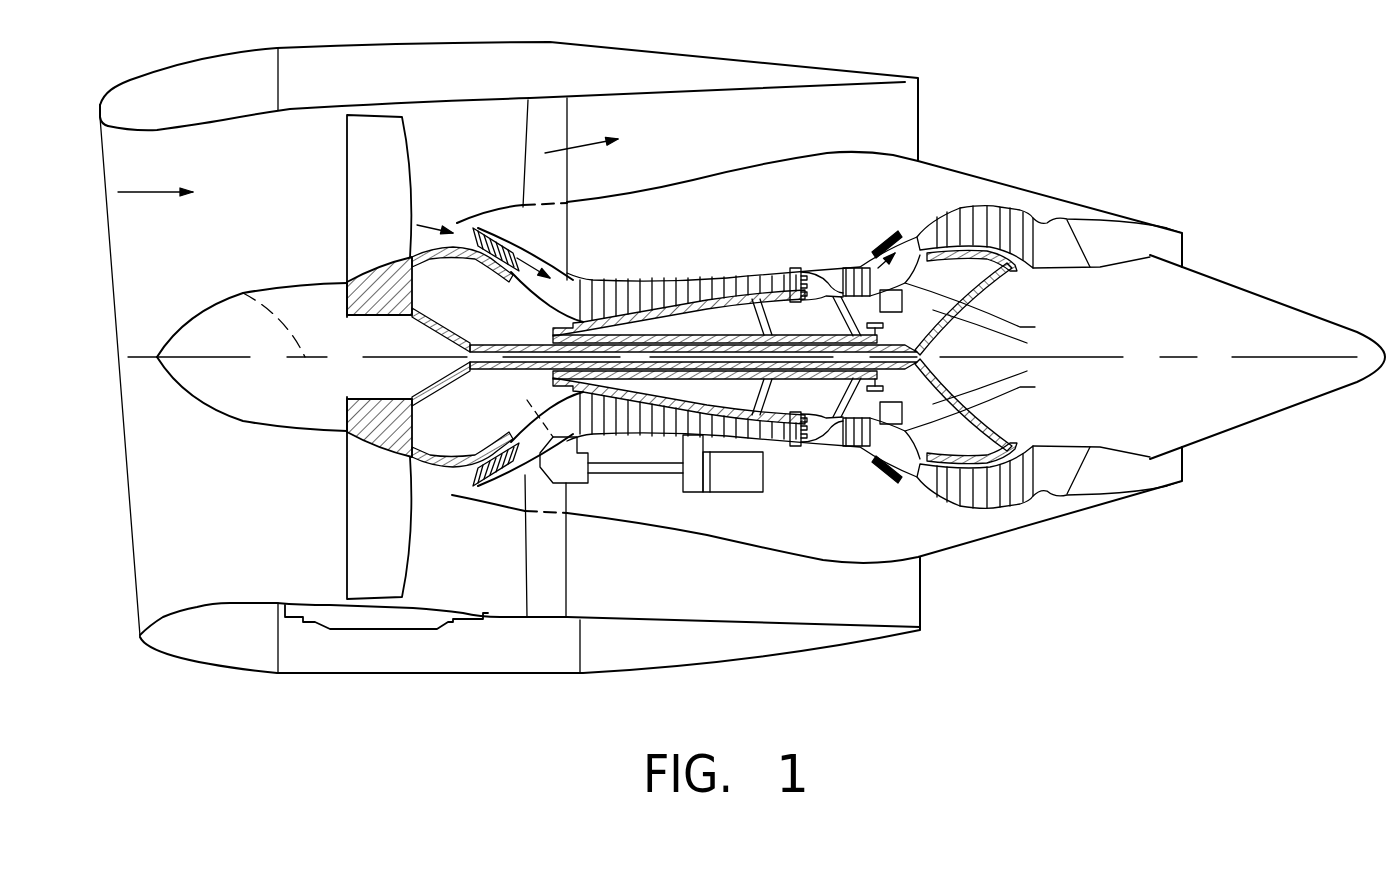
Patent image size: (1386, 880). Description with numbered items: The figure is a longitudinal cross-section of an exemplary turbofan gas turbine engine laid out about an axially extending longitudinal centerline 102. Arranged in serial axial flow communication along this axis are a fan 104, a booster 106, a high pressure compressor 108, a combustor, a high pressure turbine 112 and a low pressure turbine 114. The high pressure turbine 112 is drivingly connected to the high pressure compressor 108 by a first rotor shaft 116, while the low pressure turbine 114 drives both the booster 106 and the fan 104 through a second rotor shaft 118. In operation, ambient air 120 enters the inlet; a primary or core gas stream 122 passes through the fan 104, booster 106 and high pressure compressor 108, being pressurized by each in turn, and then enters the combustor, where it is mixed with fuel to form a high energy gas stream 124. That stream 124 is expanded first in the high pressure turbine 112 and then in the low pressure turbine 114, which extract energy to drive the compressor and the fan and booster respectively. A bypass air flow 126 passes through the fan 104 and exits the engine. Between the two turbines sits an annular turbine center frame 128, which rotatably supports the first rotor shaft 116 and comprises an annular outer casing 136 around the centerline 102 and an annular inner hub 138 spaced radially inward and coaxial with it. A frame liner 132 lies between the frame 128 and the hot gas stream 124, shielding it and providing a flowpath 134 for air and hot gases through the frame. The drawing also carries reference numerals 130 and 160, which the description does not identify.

The longitudinal centerline 102 is at (233, 293).
The fan 104 is at (363, 173).
The booster 106 is at (457, 223).
The high pressure compressor 108 is at (620, 287).
The high pressure turbine 112 is at (840, 275).
The low pressure turbine 114 is at (975, 230).
The first rotor shaft 116 is at (866, 372).
The second rotor shaft 118 is at (1221, 357).
The ambient air 120 is at (145, 190).
The primary gas stream 122 is at (540, 243).
The high energy gas stream 124 is at (872, 266).
The bypass air flow 126 is at (583, 150).
The turbine center frame 128 is at (973, 318).
The low pressure shaft 130 is at (925, 352).
The frame liner 132 is at (983, 285).
The flowpath 134 is at (940, 237).
The annular outer casing 136 is at (900, 240).
The annular inner hub 138 is at (1010, 358).
The fuel nozzle 160 is at (808, 268).